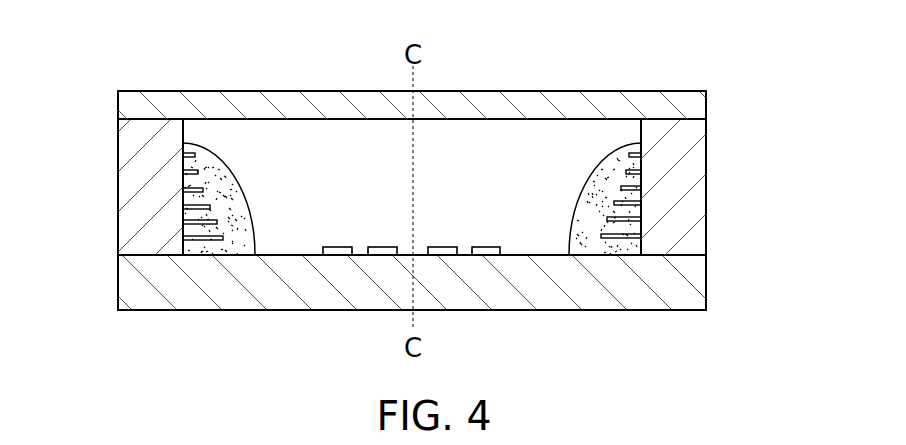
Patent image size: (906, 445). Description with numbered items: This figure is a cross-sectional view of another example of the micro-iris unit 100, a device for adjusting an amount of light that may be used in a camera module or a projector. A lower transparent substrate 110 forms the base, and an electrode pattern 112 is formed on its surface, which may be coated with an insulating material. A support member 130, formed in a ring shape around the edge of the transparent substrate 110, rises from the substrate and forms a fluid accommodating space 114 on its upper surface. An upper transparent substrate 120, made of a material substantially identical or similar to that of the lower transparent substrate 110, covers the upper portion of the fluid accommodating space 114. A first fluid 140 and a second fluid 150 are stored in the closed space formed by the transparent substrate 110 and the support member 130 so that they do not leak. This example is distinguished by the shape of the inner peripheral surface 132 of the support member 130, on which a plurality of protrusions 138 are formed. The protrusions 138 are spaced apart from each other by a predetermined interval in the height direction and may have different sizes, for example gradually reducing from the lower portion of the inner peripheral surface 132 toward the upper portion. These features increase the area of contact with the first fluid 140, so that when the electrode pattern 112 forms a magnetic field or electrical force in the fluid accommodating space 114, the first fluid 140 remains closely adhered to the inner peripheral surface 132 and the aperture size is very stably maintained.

The micro-iris unit 100 is at (558, 66).
The transparent substrate 110 is at (693, 280).
The electrode pattern 112 is at (443, 256).
The fluid accommodating space 114 is at (460, 173).
The transparent substrate 120 is at (693, 105).
The support member 130 is at (693, 180).
The inner peripheral surface 132 is at (185, 182).
The protrusions 138 is at (212, 253).
The first fluid 140 is at (227, 143).
The second fluid 150 is at (330, 133).